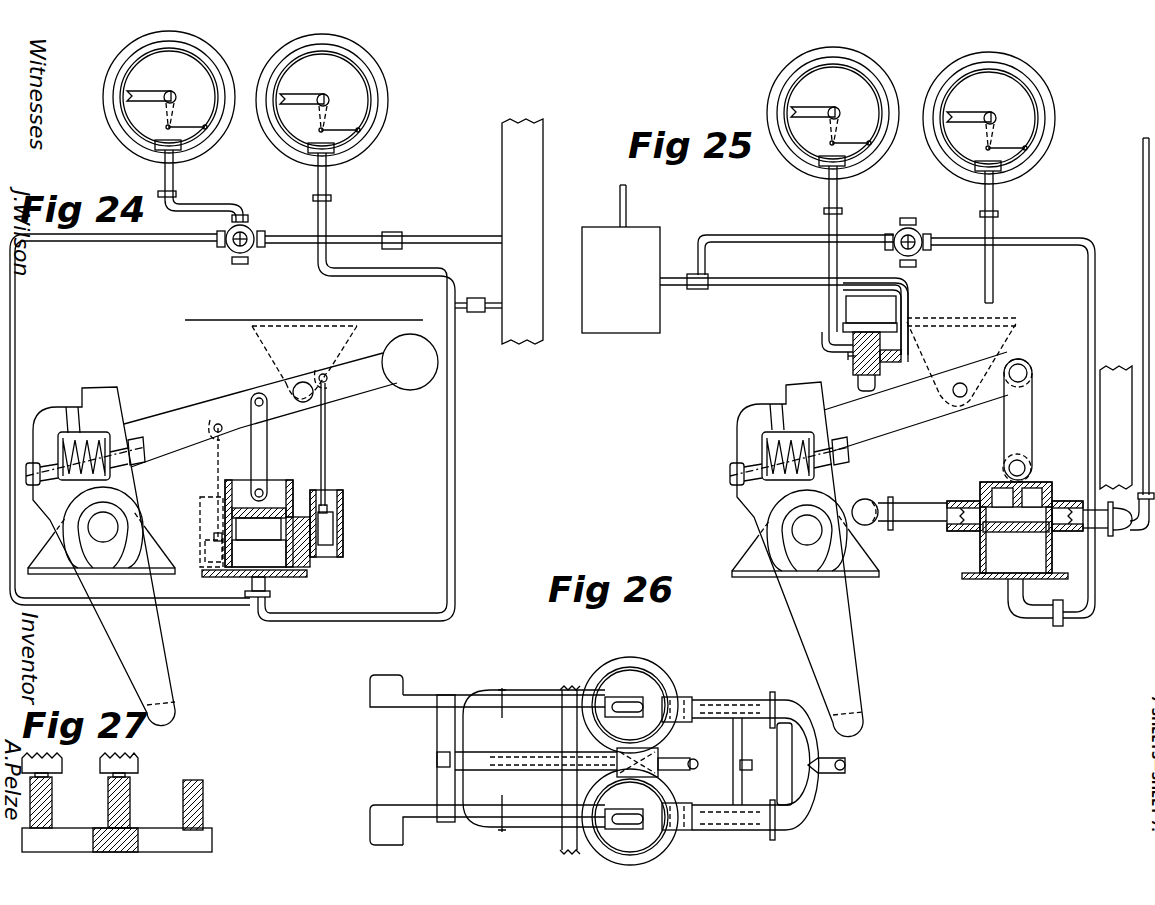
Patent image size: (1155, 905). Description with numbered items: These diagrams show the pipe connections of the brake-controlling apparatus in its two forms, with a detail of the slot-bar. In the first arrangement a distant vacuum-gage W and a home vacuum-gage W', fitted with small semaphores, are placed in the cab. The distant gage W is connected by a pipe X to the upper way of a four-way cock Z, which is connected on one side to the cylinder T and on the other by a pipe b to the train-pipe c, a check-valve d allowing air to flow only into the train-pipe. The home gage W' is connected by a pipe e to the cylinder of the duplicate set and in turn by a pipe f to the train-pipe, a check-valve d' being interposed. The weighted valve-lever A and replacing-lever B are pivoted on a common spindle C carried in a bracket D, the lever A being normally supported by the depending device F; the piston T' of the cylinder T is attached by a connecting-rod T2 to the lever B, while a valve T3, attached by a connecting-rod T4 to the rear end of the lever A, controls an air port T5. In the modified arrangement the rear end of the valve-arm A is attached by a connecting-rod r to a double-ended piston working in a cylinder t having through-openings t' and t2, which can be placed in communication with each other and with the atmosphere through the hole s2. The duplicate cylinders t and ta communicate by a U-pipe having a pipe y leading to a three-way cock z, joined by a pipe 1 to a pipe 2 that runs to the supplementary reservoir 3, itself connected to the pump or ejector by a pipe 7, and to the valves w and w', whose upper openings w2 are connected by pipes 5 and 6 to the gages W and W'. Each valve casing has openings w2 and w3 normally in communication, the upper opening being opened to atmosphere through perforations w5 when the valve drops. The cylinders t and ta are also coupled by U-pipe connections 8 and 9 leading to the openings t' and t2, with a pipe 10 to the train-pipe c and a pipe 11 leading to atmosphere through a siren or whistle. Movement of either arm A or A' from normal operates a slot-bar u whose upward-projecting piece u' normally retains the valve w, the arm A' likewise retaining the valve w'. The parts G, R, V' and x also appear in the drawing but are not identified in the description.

In FIG. 24, the distant vacuum-gage W is at (143, 97).
In FIG. 25, the distant vacuum-gage W is at (814, 113).
In FIG. 24, the home vacuum-gage W' is at (345, 100).
In FIG. 25, the home vacuum-gage W' is at (1015, 118).
In FIG. 24, the pipe X is at (220, 203).
In FIG. 24, the four-way cock Z is at (252, 250).
In FIG. 24, the pipe b is at (443, 240).
In FIG. 24, the check-valve d is at (412, 253).
In FIG. 24, the train-pipe c is at (522, 231).
In FIG. 25, the train-pipe c is at (1116, 427).
In FIG. 24, the pipe e is at (455, 422).
In FIG. 24, the pipe f is at (484, 312).
In FIG. 24, the check-valve d' is at (473, 349).
In FIG. 24, the bracket D is at (304, 359).
In FIG. 24, the spindle C is at (292, 387).
In FIG. 25, the spindle C is at (962, 382).
In FIG. 26, the spindle C is at (560, 835).
In FIG. 24, the replacing-lever B is at (395, 362).
In FIG. 24, the valve-lever A is at (260, 410).
In FIG. 25, the valve-lever A is at (916, 402).
In FIG. 26, the valve-lever A is at (487, 805).
In FIG. 27, the valve-lever A is at (208, 805).
In FIG. 24, the depending device F is at (147, 480).
In FIG. 25, the depending device F is at (838, 483).
In FIG. 24, the bracket G is at (52, 547).
In FIG. 25, the bracket G is at (762, 548).
In FIG. 24, the roller R is at (103, 527).
In FIG. 25, the roller R is at (807, 530).
In FIG. 24, the cylinder T is at (255, 513).
In FIG. 24, the connecting-rod T2 is at (233, 480).
In FIG. 24, the piston T' is at (259, 525).
In FIG. 24, the valve chamber V' is at (256, 554).
In FIG. 24, the valve T3 is at (340, 513).
In FIG. 24, the connecting-rod T4 is at (328, 432).
In FIG. 24, the air port T5 is at (313, 557).
In FIG. 25, the supplementary reservoir 3 is at (621, 280).
In FIG. 25, the pipe 7 is at (628, 208).
In FIG. 26, the pipe 7 is at (750, 762).
In FIG. 25, the pipe 1 is at (773, 240).
In FIG. 25, the pipe 2 is at (752, 284).
In FIG. 25, the pipe 5 is at (838, 273).
In FIG. 25, the pipe 6 is at (993, 283).
In FIG. 25, the three-way cock z is at (908, 226).
In FIG. 25, the pipe y is at (1045, 245).
In FIG. 25, the pipe 10 is at (1088, 420).
In FIG. 26, the pipe 10 is at (685, 768).
In FIG. 25, the pipe 11 is at (1145, 313).
In FIG. 26, the pipe 11 is at (850, 765).
In FIG. 25, the opening w3 is at (903, 344).
In FIG. 25, the perforations w5 is at (860, 324).
In FIG. 25, the opening w2 is at (845, 351).
In FIG. 25, the valve w' is at (851, 380).
In FIG. 27, the valve w' is at (55, 752).
In FIG. 25, the connecting-rod r is at (1017, 420).
In FIG. 25, the U-pipe connection 8 is at (925, 517).
In FIG. 26, the U-pipe connection 8 is at (483, 735).
In FIG. 25, the through-opening t' is at (957, 533).
In FIG. 25, the cylinder t is at (1015, 550).
In FIG. 26, the cylinder t is at (640, 818).
In FIG. 25, the hole s2 is at (1028, 480).
In FIG. 25, the through-opening t2 is at (1056, 526).
In FIG. 25, the U-pipe connection 9 is at (1116, 537).
In FIG. 26, the U-pipe connection 9 is at (797, 753).
In FIG. 25, the coupling x is at (1066, 622).
In FIG. 26, the valve-arm A' is at (487, 678).
In FIG. 27, the valve-arm A' is at (27, 802).
In FIG. 26, the cylinder ta is at (660, 673).
In FIG. 27, the slot-bar u is at (134, 843).
In FIG. 27, the upward-projecting piece u' is at (137, 802).
In FIG. 27, the valve w is at (139, 759).